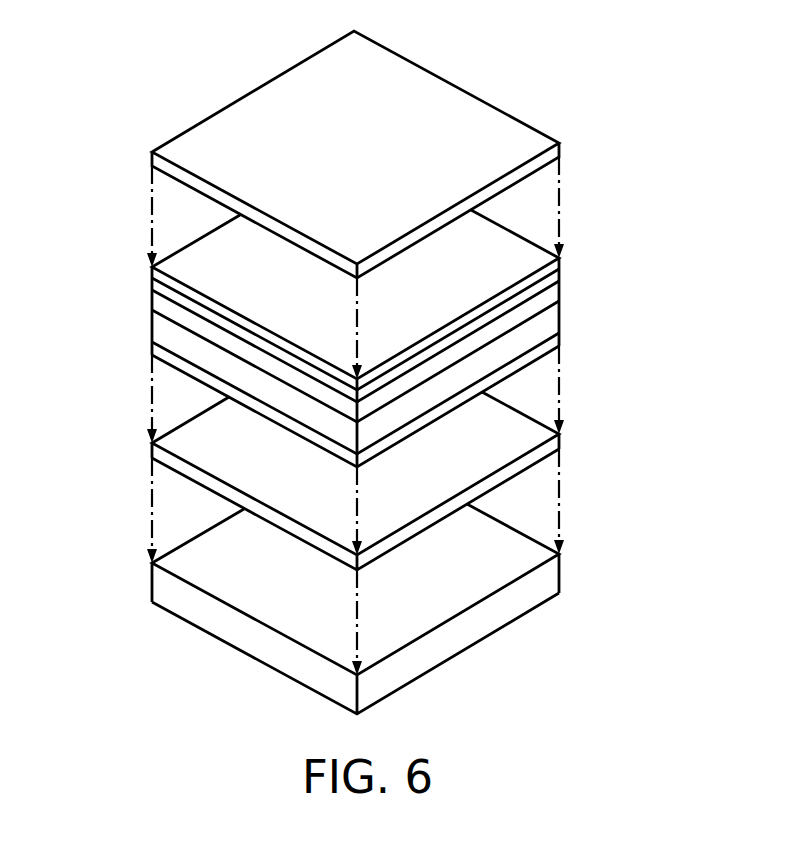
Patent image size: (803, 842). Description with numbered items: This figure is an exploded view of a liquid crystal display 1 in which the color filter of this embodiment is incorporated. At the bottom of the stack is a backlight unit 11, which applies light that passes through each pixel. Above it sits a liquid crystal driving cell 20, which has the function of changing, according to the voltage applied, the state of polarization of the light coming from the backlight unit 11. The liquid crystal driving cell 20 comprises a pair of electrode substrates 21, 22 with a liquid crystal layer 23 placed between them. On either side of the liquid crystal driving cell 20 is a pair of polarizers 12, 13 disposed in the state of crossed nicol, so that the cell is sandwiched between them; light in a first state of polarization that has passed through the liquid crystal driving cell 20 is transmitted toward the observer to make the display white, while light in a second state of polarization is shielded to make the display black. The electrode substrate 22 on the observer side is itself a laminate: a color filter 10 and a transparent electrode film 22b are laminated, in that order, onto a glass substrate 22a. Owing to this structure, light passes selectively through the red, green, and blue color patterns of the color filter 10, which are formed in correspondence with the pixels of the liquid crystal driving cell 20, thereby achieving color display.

The liquid crystal display 1 is at (553, 78).
The color filter 10 is at (153, 289).
The backlight unit 11 is at (556, 576).
The polarizer 12 is at (525, 425).
The polarizer 13 is at (523, 131).
The liquid crystal driving cell 20 is at (384, 338).
The electrode substrate 21 is at (398, 401).
The electrode substrate 22 is at (352, 337).
The glass substrate 22a is at (152, 272).
The transparent electrode film 22b is at (168, 313).
The liquid crystal layer 23 is at (560, 323).